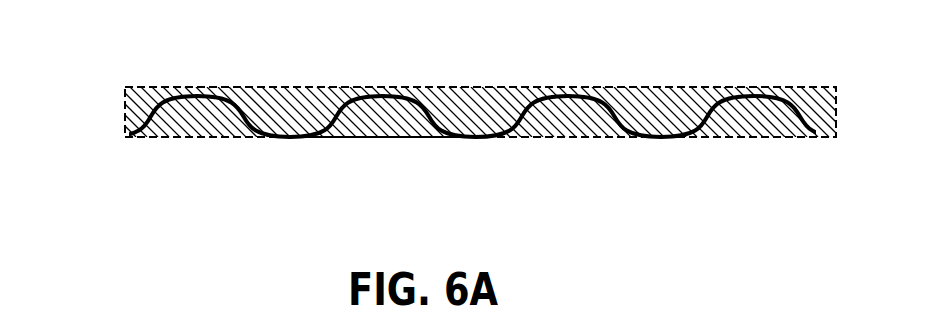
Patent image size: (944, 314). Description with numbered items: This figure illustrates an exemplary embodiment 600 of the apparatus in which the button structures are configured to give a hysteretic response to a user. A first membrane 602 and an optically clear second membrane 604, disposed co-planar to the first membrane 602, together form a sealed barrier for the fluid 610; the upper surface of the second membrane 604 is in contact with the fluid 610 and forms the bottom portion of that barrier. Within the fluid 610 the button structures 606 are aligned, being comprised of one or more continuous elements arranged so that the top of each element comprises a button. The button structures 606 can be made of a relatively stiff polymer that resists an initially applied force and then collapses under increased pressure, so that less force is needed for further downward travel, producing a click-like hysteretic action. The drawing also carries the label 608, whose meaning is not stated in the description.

The exemplary embodiment 600 is at (153, 46).
The first membrane 602 is at (487, 87).
The second membrane 604 is at (418, 138).
The button structures 606 is at (757, 90).
The sinusoidal fiber 608 is at (197, 98).
The fluid 610 is at (560, 118).